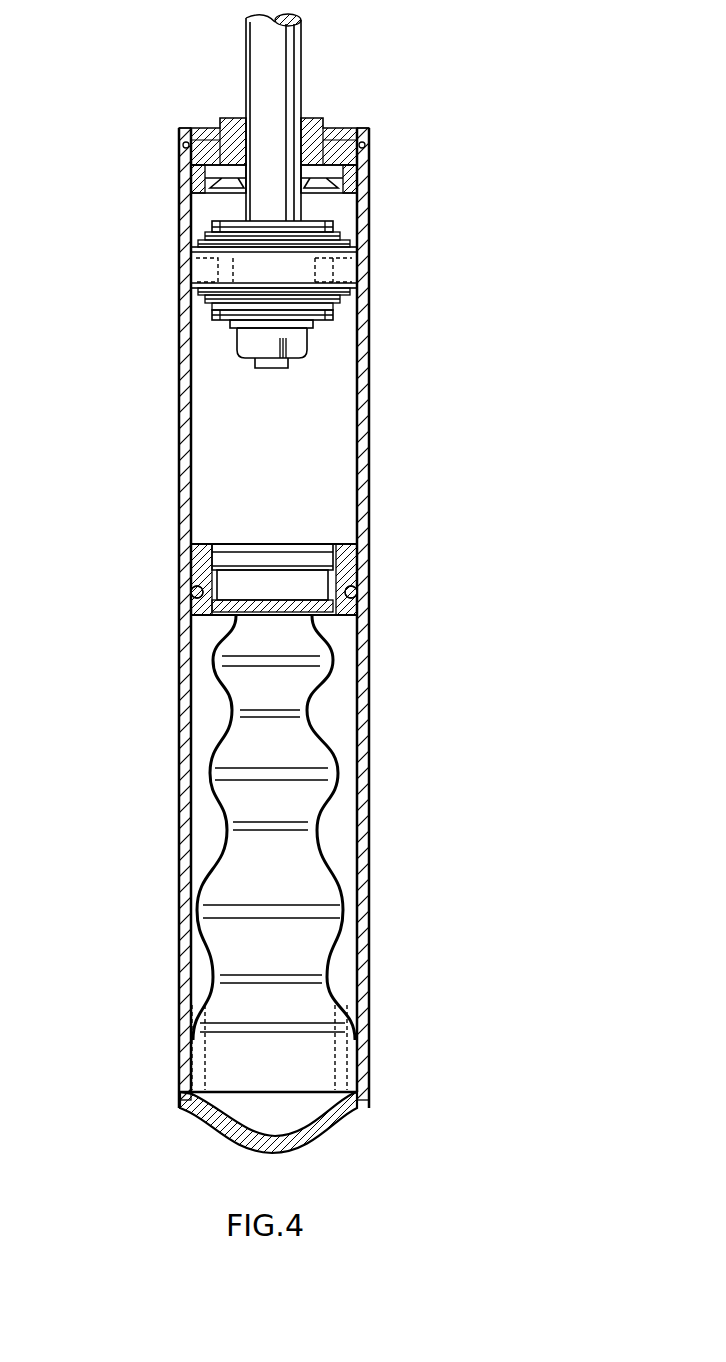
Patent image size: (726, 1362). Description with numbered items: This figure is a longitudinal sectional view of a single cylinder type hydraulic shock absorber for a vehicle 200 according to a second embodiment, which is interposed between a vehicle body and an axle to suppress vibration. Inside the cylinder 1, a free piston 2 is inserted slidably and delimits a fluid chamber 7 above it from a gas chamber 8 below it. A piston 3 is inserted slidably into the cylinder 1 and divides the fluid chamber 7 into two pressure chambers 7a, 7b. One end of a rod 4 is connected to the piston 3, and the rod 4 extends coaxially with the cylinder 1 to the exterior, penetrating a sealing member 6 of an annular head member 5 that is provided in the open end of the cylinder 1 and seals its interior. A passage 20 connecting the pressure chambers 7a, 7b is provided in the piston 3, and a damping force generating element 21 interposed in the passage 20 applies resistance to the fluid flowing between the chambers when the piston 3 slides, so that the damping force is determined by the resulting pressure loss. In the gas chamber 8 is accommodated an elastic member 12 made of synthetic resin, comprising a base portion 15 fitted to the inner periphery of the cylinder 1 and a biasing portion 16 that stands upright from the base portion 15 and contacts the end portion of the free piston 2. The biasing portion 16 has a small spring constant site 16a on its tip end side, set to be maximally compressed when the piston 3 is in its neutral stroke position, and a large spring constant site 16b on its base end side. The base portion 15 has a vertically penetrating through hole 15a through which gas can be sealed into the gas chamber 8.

The single cylinder type hydraulic shock absorber for a vehicle 200 is at (385, 92).
The cylinder 1 is at (180, 380).
The free piston 2 is at (346, 572).
The piston 3 is at (215, 262).
The rod 4 is at (258, 38).
The annular head member 5 is at (352, 160).
The sealing member 6 is at (228, 195).
The fluid chamber 7 is at (303, 291).
The pressure chamber 7a is at (352, 217).
The pressure chamber 7b is at (322, 328).
The gas chamber 8 is at (277, 828).
The elastic member 12 is at (205, 872).
The base portion 15 is at (252, 1075).
The through hole 15a is at (192, 1045).
The biasing portion 16 is at (342, 873).
The small spring constant site 16a is at (210, 773).
The large spring constant site 16b is at (346, 915).
The passage 20 is at (196, 283).
The damping force generating element 21 is at (213, 236).